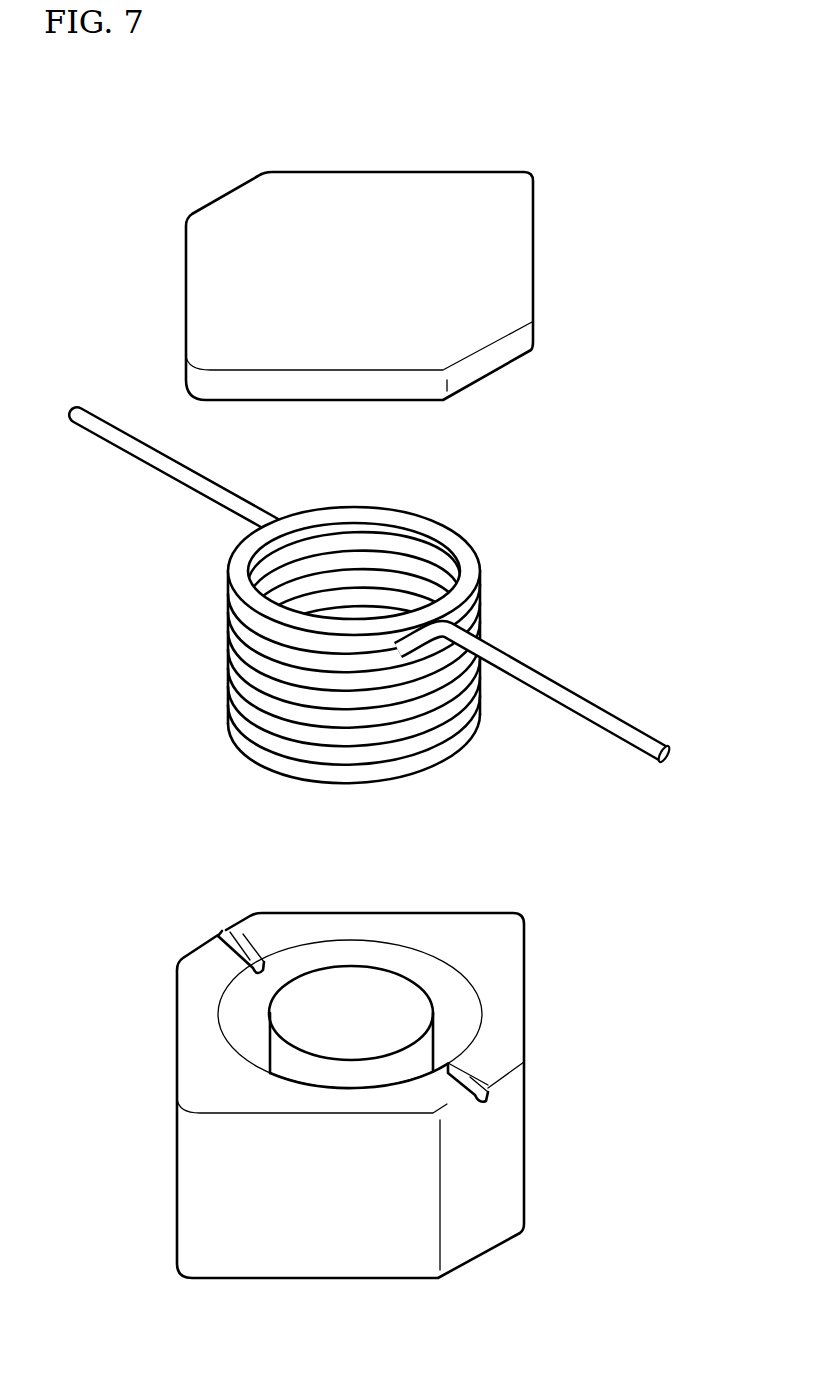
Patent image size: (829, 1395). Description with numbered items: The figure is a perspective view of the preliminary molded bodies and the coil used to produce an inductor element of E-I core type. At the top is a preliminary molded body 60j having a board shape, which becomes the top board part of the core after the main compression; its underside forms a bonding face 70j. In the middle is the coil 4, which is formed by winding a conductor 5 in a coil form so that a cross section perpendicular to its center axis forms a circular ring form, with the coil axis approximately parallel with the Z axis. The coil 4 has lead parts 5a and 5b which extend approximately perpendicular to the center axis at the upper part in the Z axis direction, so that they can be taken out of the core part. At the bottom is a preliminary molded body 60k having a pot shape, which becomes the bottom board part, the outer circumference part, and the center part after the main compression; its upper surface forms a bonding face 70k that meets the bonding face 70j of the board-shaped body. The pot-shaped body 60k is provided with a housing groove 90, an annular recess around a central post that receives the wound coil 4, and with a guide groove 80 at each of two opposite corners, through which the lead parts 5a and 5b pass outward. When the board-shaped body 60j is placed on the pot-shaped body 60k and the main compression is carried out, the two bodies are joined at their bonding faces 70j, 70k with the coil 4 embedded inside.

The preliminary molded body 60j is at (507, 253).
The bonding face 70j is at (487, 378).
The coil 4 is at (460, 523).
The conductor 5 is at (272, 735).
The lead part 5a is at (123, 451).
The lead part 5b is at (568, 694).
The preliminary molded body 60k is at (510, 1180).
The bonding face 70k is at (210, 1076).
The guide groove 80 is at (243, 946).
The housing groove 90 is at (440, 981).